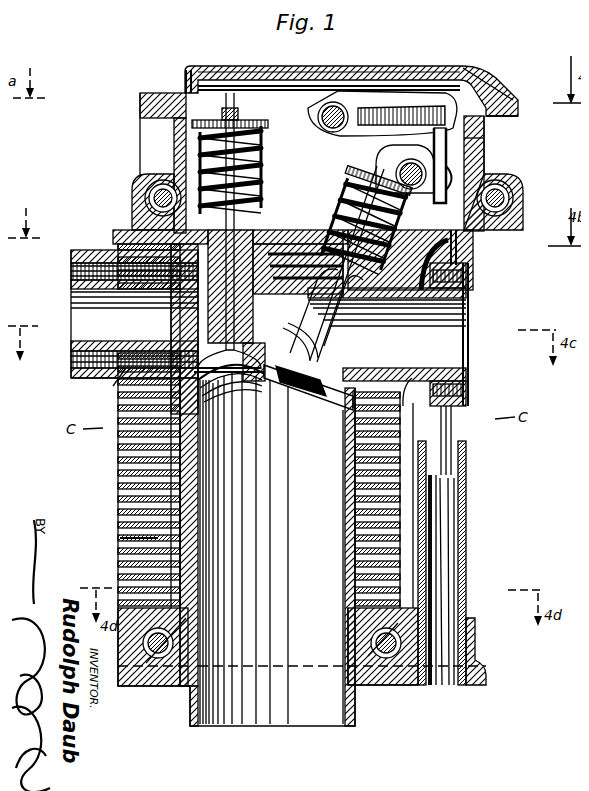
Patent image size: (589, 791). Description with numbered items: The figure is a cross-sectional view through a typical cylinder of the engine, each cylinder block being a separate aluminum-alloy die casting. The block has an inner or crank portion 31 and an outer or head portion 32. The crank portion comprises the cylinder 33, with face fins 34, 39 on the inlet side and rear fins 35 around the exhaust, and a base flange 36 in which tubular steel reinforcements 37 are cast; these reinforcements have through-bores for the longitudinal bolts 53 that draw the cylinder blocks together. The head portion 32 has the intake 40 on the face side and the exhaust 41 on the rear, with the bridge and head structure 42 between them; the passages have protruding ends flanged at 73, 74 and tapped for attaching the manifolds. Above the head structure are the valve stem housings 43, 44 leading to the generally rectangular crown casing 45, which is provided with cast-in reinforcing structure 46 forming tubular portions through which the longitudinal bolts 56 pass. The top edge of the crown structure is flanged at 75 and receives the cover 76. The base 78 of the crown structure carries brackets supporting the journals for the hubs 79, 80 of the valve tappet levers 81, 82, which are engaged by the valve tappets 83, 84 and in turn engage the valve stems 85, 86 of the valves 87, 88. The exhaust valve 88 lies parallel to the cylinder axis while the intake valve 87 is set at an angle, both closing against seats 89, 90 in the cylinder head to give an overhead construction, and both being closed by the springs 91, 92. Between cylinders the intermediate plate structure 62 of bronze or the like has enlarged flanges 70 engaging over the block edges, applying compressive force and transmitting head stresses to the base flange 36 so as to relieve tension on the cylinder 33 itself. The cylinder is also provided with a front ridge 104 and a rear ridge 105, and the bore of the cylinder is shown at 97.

The crank portion 31 is at (112, 545).
The head portion 32 is at (476, 140).
The cylinder 33 is at (215, 512).
The face fins 34 is at (395, 445).
The rear fins 35 is at (163, 250).
The base flange 36 is at (150, 665).
The reinforcements 37 is at (140, 655).
The face fins 39 is at (452, 258).
The intake 40 is at (388, 334).
The exhaust 41 is at (134, 314).
The bridge and head structure 42 is at (262, 372).
The valve stem housing 43 is at (352, 330).
The valve stem housing 44 is at (166, 222).
The crown casing 45 is at (132, 108).
The cast-in reinforcing structure 46 is at (155, 176).
The longitudinal bolts 53 is at (150, 650).
The longitudinal bolts 56 is at (137, 190).
The intermediate plate structure 62 is at (112, 488).
The flange 70 is at (395, 78).
The flange 73 is at (458, 395).
The flange 74 is at (66, 364).
The flange 75 is at (505, 110).
The cover 76 is at (470, 68).
The base of the crown structure 78 is at (250, 222).
The hub 79 is at (333, 98).
The hub 80 is at (440, 160).
The valve tappet lever 81 is at (382, 113).
The valve tappet lever 82 is at (395, 158).
The valve tappet 83 is at (450, 128).
The valve tappet 84 is at (435, 228).
The valve stem 85 is at (176, 62).
The valve stem 86 is at (365, 155).
The intake valve 87 is at (322, 320).
The exhaust valve 88 is at (212, 338).
The valve seat 89 is at (186, 360).
The valve seat 90 is at (322, 395).
The valve spring 91 is at (258, 145).
The intake valve spring 92 is at (345, 196).
The cylinder bore 97 is at (275, 548).
The front ridge 104 is at (440, 545).
The rear ridge 105 is at (112, 530).